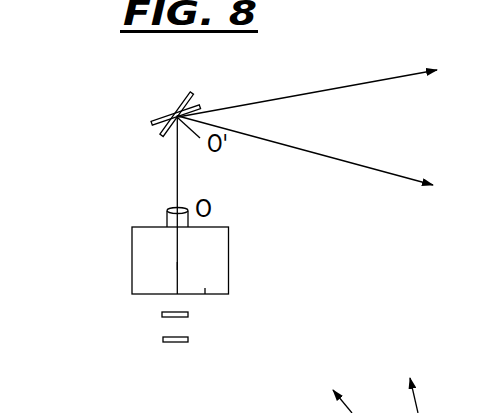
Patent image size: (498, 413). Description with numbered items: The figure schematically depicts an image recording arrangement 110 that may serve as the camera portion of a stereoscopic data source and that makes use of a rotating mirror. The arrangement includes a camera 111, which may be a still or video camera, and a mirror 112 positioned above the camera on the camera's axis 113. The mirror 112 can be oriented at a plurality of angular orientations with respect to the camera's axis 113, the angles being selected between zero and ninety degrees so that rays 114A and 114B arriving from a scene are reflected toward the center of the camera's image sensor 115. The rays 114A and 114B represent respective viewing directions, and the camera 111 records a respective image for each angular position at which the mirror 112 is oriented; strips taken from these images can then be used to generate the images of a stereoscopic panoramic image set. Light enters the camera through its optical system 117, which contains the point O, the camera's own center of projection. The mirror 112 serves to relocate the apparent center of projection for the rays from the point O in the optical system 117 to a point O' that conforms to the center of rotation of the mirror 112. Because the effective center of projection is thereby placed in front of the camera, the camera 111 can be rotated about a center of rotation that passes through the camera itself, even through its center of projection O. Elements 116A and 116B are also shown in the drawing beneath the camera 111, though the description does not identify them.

The image recording arrangement 110 is at (97, 358).
The camera 111 is at (132, 252).
The mirror 112 is at (152, 122).
The camera's axis 113 is at (178, 268).
The ray 114A is at (402, 75).
The ray 114B is at (397, 175).
The image sensor 115 is at (205, 288).
The first sensor 116A is at (162, 312).
The second sensor 116B is at (175, 343).
The optical system 117 is at (167, 215).